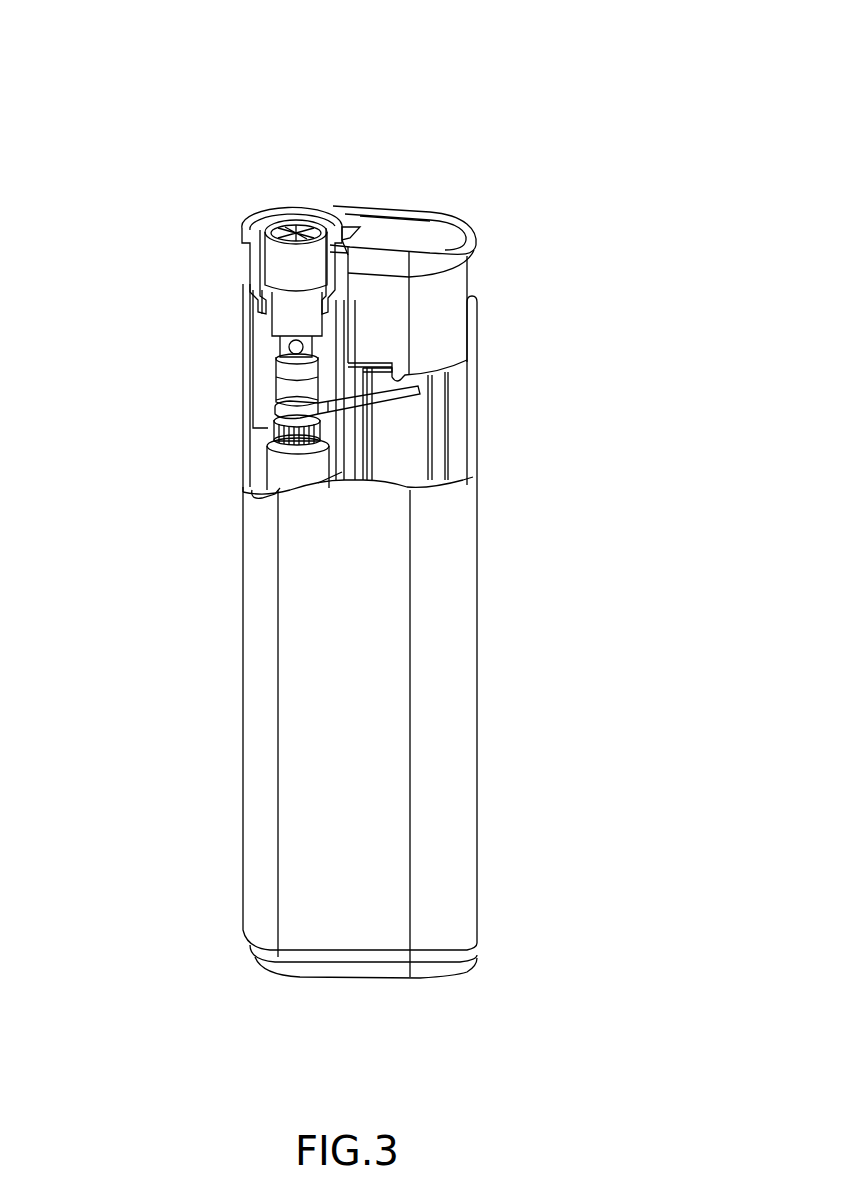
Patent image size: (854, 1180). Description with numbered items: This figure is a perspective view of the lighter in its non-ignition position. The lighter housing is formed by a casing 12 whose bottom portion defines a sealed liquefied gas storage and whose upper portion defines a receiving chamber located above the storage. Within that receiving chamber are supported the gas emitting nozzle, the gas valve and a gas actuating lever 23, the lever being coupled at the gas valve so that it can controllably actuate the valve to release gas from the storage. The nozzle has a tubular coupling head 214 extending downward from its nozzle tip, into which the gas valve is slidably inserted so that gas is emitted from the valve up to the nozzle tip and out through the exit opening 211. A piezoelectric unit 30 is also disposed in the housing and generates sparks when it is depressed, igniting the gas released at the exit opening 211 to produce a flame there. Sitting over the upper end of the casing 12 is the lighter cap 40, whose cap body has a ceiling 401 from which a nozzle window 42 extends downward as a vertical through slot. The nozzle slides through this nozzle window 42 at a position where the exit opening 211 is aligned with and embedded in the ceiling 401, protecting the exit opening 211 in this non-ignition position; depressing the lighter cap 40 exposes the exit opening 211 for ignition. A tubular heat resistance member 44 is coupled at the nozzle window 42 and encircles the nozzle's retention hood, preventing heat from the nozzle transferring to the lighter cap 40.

The casing 12 is at (322, 754).
The exit opening 211 is at (284, 192).
The heat resistance member 44 is at (243, 218).
The nozzle window 42 is at (350, 188).
The ceiling 401 is at (468, 220).
The lighter cap 40 is at (447, 283).
The piezoelectric unit 30 is at (410, 443).
The gas actuating lever 23 is at (330, 398).
The coupling head 214 is at (290, 373).